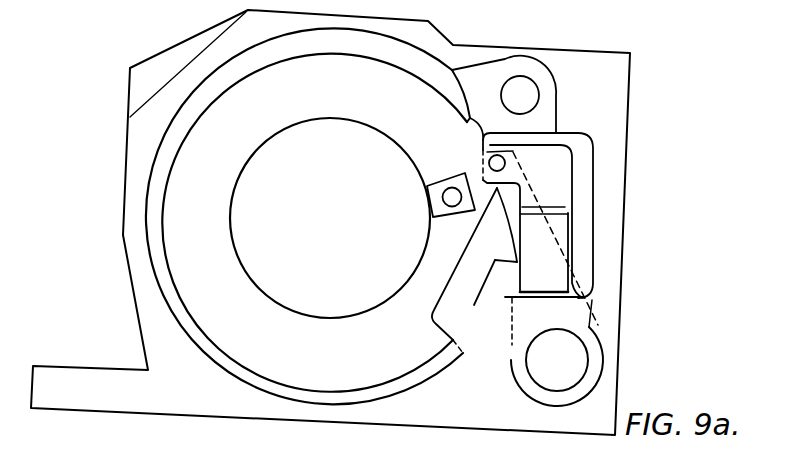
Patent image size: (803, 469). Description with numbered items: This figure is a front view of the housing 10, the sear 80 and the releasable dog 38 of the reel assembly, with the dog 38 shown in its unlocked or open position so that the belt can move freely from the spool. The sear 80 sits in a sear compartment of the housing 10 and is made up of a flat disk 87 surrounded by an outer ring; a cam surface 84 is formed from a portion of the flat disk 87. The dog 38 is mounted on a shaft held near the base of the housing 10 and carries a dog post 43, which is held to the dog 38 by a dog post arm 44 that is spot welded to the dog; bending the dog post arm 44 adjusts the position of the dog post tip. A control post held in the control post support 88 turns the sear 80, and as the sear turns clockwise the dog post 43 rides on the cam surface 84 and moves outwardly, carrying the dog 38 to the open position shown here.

The housing 10 is at (632, 100).
The sear 80 is at (366, 96).
The flat disk 87 is at (330, 239).
The control post support 88 is at (436, 204).
The cam surface 84 is at (468, 265).
The dog post 43 is at (505, 163).
The dog post arm 44 is at (558, 197).
The releasable dog 38 is at (580, 281).